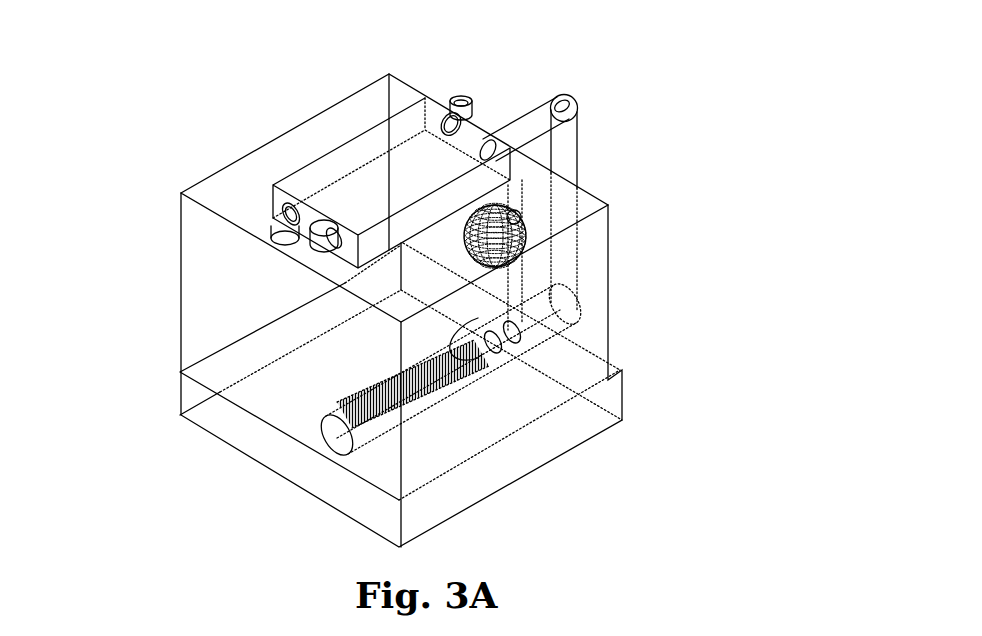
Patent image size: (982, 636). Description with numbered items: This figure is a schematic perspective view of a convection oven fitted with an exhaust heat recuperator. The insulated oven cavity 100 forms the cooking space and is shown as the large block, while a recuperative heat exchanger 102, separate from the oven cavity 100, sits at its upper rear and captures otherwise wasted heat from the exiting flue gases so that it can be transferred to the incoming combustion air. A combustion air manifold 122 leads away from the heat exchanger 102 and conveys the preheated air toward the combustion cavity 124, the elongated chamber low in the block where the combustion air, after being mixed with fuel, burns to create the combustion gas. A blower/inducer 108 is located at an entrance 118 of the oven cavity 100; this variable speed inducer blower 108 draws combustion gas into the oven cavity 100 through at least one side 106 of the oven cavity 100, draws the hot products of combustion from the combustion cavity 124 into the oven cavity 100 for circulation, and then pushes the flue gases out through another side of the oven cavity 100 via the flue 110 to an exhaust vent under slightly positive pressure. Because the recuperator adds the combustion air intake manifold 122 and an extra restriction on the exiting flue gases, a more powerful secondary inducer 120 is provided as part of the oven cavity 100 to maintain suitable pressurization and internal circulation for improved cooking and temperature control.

The oven cavity 100 is at (197, 286).
The heat exchanger 102 is at (407, 124).
The side of the oven cavity 106 is at (587, 308).
The blower/inducer 108 is at (527, 212).
The flue 110 is at (464, 99).
The entrance of the oven cavity 118 is at (527, 178).
The secondary inducer 120 is at (530, 235).
The combustion air manifold 122 is at (566, 150).
The combustion cavity 124 is at (347, 433).